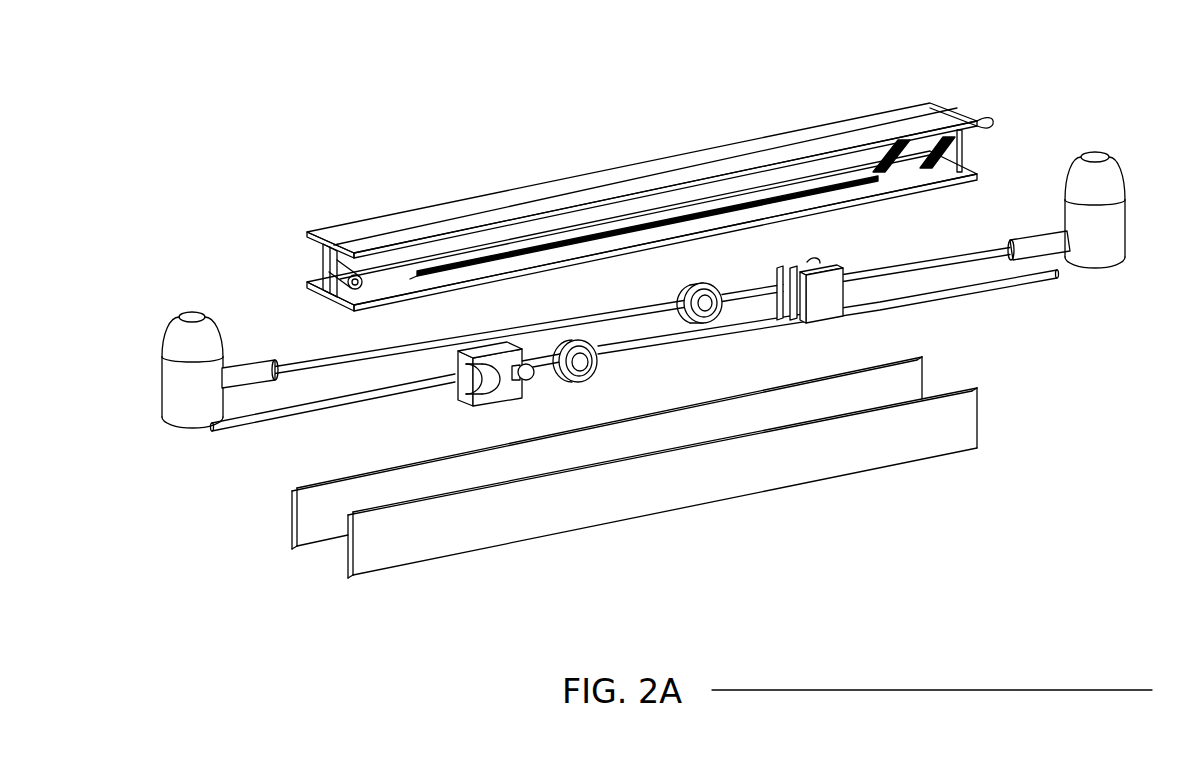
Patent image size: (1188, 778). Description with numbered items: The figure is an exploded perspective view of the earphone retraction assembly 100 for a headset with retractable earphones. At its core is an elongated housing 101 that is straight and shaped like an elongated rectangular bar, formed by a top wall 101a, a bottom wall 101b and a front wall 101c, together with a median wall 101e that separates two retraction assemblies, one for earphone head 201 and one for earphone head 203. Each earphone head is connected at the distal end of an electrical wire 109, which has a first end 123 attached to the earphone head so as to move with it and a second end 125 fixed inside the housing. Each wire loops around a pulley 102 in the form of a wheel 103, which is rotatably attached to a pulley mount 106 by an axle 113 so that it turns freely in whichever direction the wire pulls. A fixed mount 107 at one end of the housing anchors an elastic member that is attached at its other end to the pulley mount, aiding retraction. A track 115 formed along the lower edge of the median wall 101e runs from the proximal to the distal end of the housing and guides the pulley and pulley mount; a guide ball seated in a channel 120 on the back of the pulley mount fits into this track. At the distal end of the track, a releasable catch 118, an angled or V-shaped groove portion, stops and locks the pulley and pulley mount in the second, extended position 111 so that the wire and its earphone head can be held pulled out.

The earphone retraction assembly 100 is at (428, 90).
The elongated housing 101 is at (527, 190).
The top wall 101a is at (317, 230).
The bottom wall 101b is at (313, 287).
The front wall 101c is at (400, 538).
The median wall 101e is at (325, 258).
The pulley 102 is at (578, 343).
The wheel 103 is at (600, 373).
The pulley mount 106 is at (490, 415).
The fixed mount 107 is at (363, 293).
The electrical wire 109 is at (320, 362).
The second, extended position 111 is at (866, 152).
The axle 113 is at (530, 382).
The track 115 is at (705, 210).
The releasable catch 118 is at (970, 128).
The channel 120 is at (798, 262).
The first end of the wire 123 is at (980, 250).
The second end of the wire 125 is at (975, 297).
The earphone head 201 is at (1107, 240).
The earphone head 203 is at (187, 407).